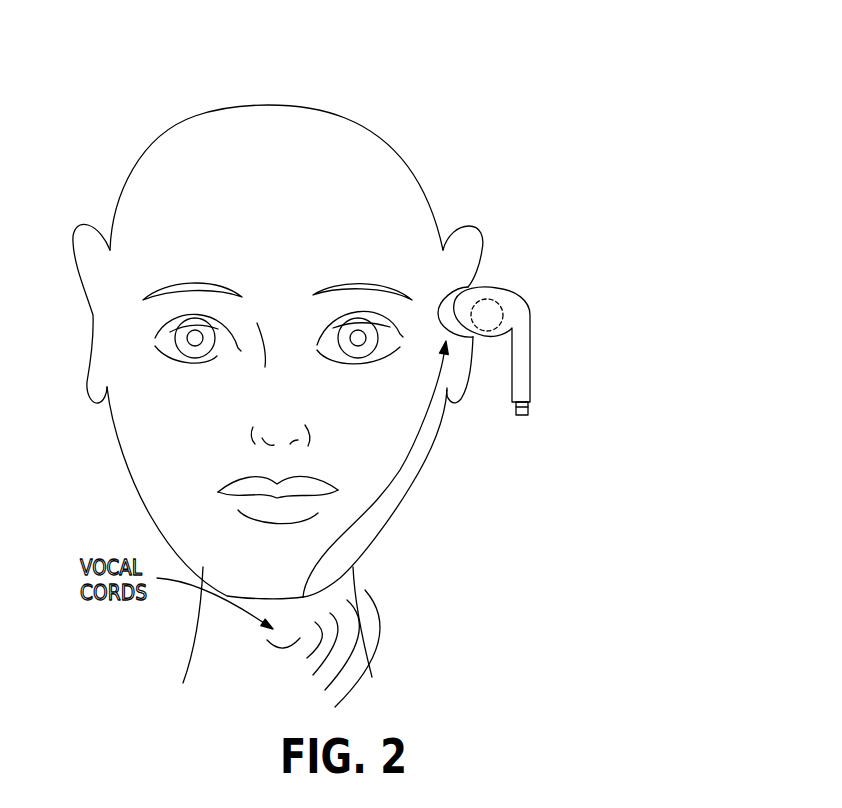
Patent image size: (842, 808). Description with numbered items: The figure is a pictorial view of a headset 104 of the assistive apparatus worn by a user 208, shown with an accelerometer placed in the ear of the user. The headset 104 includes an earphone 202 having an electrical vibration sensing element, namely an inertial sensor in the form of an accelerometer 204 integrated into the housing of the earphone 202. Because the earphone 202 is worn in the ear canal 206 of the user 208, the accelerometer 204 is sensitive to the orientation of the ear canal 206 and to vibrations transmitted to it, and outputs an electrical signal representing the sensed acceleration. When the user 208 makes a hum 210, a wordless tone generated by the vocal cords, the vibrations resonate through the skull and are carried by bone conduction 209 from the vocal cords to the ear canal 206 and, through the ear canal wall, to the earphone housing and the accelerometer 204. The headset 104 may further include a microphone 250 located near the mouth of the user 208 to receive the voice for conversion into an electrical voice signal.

The user 208 is at (427, 193).
The ear canal 206 is at (468, 287).
The headset 104 is at (587, 344).
The earphone 202 is at (530, 343).
The accelerometer 204 is at (502, 302).
The microphone 250 is at (520, 415).
The bone conduction 209 is at (413, 450).
The hum 210 is at (373, 603).